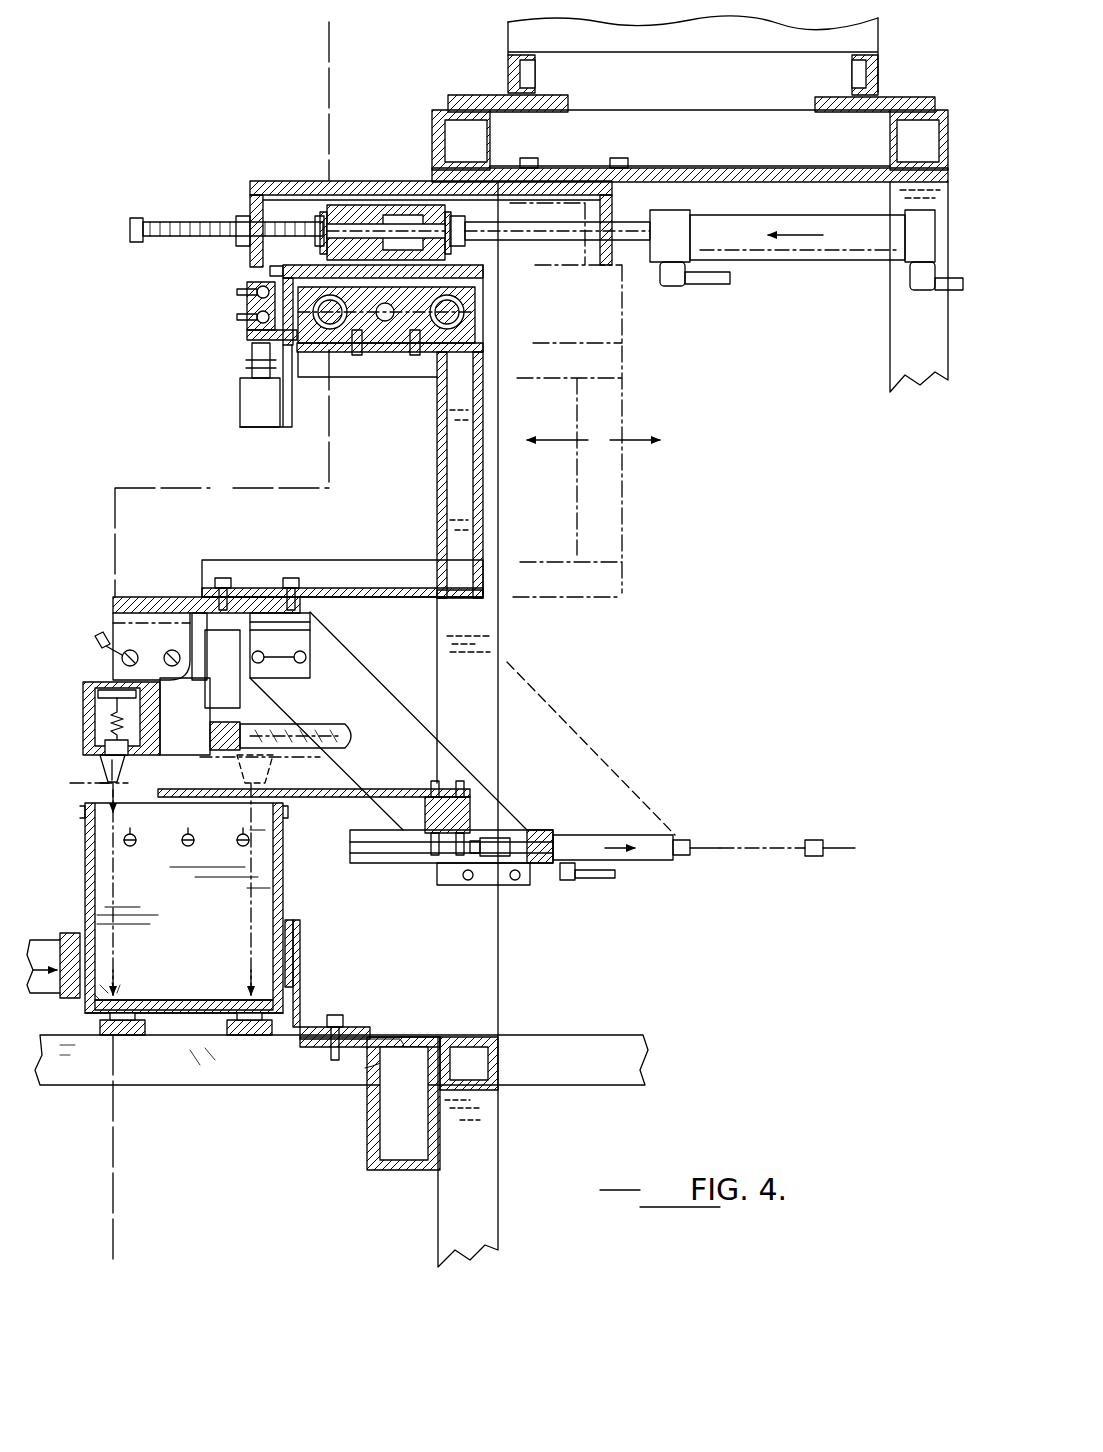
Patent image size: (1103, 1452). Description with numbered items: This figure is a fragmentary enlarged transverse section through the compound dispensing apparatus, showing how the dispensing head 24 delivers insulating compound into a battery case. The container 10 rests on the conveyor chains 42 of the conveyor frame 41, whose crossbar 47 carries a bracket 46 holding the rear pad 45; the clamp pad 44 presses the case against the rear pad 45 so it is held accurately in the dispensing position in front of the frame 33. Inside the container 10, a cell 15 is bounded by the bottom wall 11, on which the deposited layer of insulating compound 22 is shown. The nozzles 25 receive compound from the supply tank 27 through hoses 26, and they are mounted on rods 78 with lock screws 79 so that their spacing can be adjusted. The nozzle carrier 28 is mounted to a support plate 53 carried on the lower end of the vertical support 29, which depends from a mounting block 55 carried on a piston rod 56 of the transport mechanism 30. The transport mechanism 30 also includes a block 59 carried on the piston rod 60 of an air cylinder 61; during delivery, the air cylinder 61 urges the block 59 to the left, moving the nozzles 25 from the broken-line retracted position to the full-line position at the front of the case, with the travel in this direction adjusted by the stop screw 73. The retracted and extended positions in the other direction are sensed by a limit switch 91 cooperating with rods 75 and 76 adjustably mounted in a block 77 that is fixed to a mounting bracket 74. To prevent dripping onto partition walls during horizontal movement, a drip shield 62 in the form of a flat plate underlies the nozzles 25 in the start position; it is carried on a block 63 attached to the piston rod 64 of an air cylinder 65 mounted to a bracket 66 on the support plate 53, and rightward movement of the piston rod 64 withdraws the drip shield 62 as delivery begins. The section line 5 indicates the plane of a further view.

The section line 5- 5 is at (385, 36).
The container 10 is at (88, 862).
The bottom wall 11 is at (195, 1013).
The cells 15 is at (206, 916).
The body of insulating compound 22 is at (135, 1003).
The dispensing head 24 is at (90, 772).
The nozzles 25 is at (83, 727).
The hoses 26 is at (352, 745).
The supply tank 27 is at (508, 30).
The nozzle carrier 28 is at (113, 625).
The vertical support 29 is at (485, 512).
The transport mechanism 30 is at (640, 285).
The frame 33 is at (912, 100).
The conveyor frame 41 is at (393, 1172).
The conveyor chains 42 is at (125, 1035).
The clamp pad 44 is at (68, 935).
The rear pad 45 is at (298, 970).
The bracket 46 is at (300, 1010).
The crossbar 47 is at (218, 1085).
The support plate 53 is at (348, 590).
The mounting block 55 is at (470, 300).
The piston rod 56 is at (380, 355).
The block 59 is at (392, 205).
The piston rod 60 is at (562, 247).
The air cylinder 61 is at (830, 255).
The drip shield 62 is at (215, 795).
The block 63 is at (465, 812).
The piston rod 64 is at (540, 852).
The air cylinder 65 is at (655, 857).
The bracket 66 is at (355, 672).
The stop screw 73 is at (135, 215).
The mounting bracket 74 is at (247, 338).
The rod 75 is at (250, 320).
The rod 76 is at (257, 290).
The block 77 is at (248, 305).
The rods 78 is at (172, 650).
The lock screws 79 is at (100, 648).
The limit switch 91 is at (240, 403).